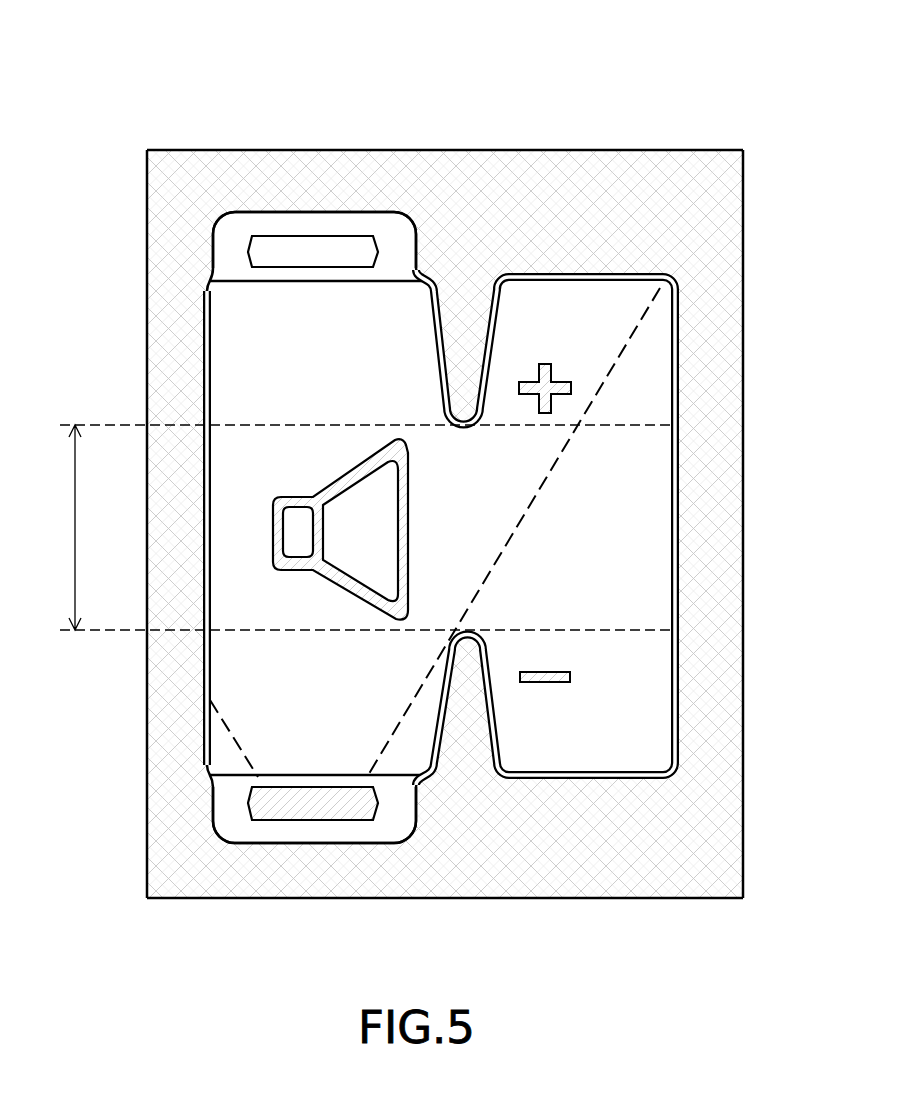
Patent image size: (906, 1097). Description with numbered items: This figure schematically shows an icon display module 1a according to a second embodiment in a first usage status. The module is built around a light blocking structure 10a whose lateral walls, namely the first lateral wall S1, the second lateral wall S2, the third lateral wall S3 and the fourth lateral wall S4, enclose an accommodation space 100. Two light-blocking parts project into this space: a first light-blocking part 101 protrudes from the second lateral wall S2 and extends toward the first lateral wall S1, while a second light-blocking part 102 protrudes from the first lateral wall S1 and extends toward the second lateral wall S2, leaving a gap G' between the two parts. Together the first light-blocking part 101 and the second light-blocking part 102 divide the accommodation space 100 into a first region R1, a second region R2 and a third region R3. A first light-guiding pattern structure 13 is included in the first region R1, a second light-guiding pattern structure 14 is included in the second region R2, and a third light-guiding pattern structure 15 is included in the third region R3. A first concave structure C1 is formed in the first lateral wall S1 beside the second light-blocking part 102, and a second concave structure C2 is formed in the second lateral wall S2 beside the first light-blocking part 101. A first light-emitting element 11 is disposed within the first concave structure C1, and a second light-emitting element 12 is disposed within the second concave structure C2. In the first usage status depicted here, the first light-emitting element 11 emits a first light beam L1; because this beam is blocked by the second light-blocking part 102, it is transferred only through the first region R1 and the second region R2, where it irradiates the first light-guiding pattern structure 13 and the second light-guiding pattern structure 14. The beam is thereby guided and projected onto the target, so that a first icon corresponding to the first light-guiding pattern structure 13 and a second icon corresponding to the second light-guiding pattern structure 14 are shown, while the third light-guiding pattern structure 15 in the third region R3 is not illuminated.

The icon display module 1a is at (662, 64).
The light blocking structure 10a is at (80, 55).
The accommodation space 100 is at (143, 20).
The first light-blocking part 101 is at (473, 322).
The second light-blocking part 102 is at (470, 738).
The first light-emitting element 11 is at (290, 806).
The second light-emitting element 12 is at (335, 248).
The first light-guiding pattern structure 13 is at (343, 487).
The second light-guiding pattern structure 14 is at (548, 367).
The third light-guiding pattern structure 15 is at (567, 678).
The first region R1 is at (255, 600).
The second region R2 is at (656, 400).
The third region R3 is at (556, 765).
The first lateral wall S1 is at (303, 882).
The second lateral wall S2 is at (563, 167).
The third lateral wall S3 is at (163, 760).
The fourth lateral wall S4 is at (730, 560).
The first concave structure C1 is at (358, 840).
The second concave structure C2 is at (298, 215).
The first light beam L1 is at (533, 500).
The gap G' is at (360, 527).